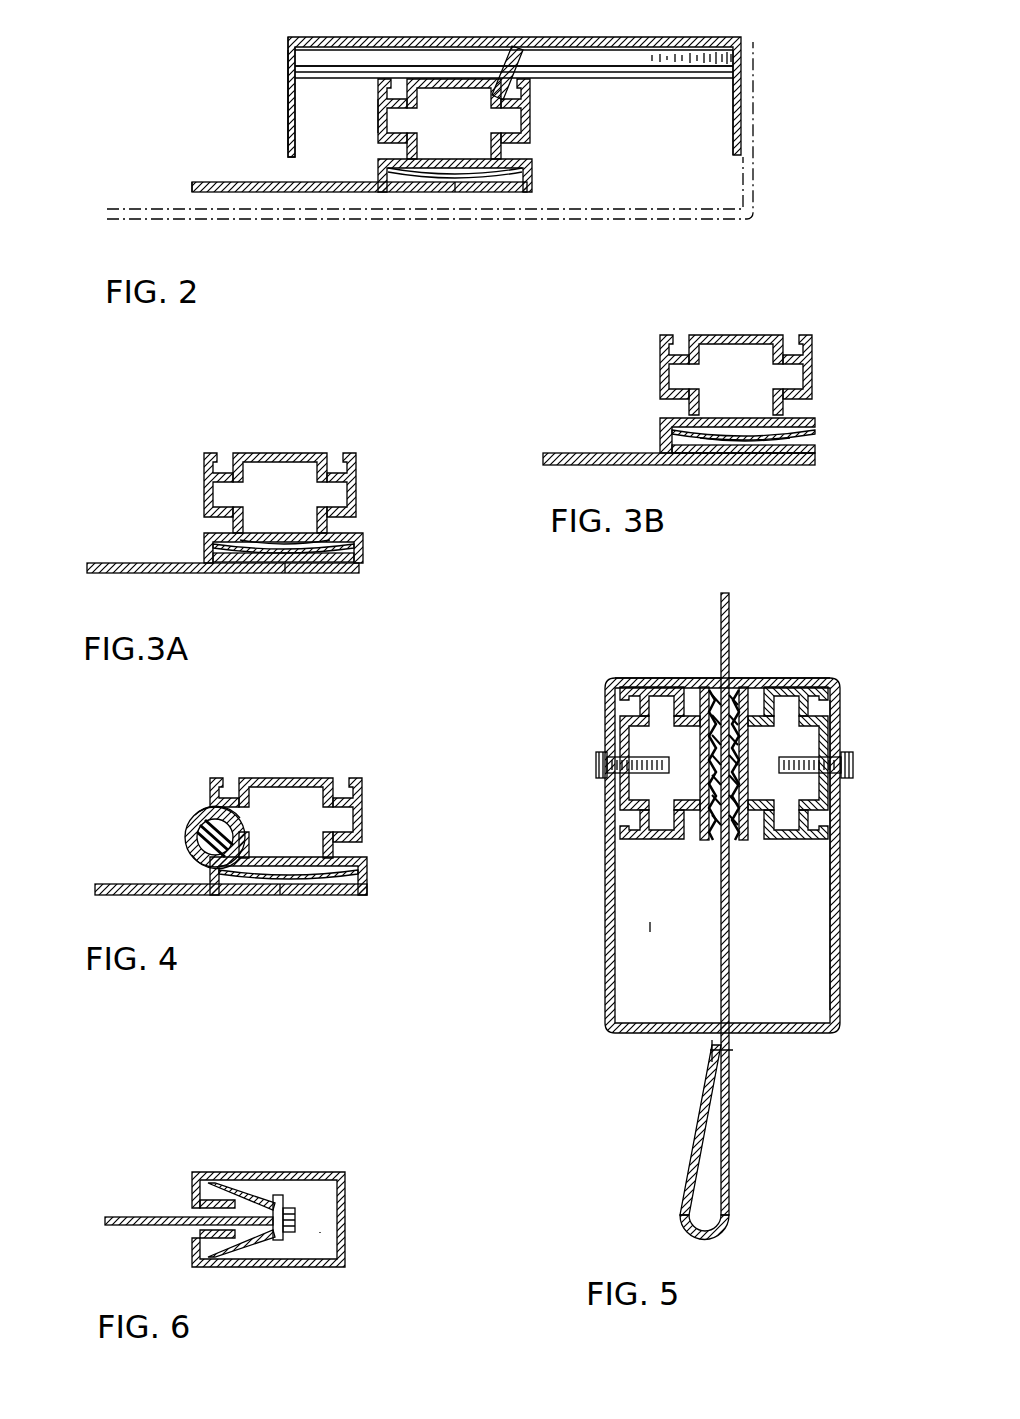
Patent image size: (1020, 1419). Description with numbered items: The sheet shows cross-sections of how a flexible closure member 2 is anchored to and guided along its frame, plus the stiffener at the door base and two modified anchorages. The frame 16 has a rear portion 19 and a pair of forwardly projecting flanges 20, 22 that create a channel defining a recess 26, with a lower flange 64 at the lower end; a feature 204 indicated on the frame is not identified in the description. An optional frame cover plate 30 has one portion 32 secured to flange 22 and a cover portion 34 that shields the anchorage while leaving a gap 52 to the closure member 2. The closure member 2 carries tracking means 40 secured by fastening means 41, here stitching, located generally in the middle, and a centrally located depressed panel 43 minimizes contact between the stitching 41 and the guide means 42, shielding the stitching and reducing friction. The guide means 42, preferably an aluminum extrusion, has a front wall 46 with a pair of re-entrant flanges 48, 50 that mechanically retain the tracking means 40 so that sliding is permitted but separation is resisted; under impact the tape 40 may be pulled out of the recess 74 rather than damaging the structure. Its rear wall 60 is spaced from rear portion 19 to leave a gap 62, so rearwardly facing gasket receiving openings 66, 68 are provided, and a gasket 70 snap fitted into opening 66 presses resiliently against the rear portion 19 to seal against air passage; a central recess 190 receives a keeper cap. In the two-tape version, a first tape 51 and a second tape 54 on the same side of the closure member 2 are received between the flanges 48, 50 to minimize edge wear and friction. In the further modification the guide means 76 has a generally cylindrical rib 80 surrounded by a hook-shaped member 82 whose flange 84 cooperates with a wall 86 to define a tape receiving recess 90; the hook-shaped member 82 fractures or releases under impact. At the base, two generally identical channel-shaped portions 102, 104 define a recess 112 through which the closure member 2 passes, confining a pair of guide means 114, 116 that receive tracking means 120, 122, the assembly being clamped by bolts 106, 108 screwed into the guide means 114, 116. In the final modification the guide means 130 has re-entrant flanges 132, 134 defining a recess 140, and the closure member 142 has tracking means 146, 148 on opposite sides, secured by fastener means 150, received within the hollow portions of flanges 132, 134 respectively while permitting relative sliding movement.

In FIG. 2, the closure member 2 is at (350, 199).
In FIG. 3A, the closure member 2 is at (223, 575).
In FIG. 3B, the closure member 2 is at (570, 452).
In FIG. 4, the closure member 2 is at (225, 891).
In FIG. 5, the closure member 2 is at (731, 628).
In FIG. 2, the frame 16 is at (515, 78).
In FIG. 2, the rear portion 19 is at (633, 40).
In FIG. 2, the forwardly projecting flange 20 is at (287, 128).
In FIG. 2, the forwardly projecting flange 22 is at (733, 127).
In FIG. 2, the recess 26 is at (313, 97).
In FIG. 2, the frame cover plate 30 is at (475, 147).
In FIG. 2, the portion of cover plate 32 is at (753, 153).
In FIG. 2, the cover portion 34 is at (367, 222).
In FIG. 2, the tracking means 40 is at (491, 152).
In FIG. 4, the tracking means 40 is at (288, 878).
In FIG. 2, the fastening means 41 is at (458, 185).
In FIG. 3A, the fastening means 41 is at (285, 573).
In FIG. 4, the fastening means 41 is at (280, 883).
In FIG. 2, the guide means 42 is at (460, 119).
In FIG. 3A, the guide means 42 is at (322, 474).
In FIG. 3B, the guide means 42 is at (822, 365).
In FIG. 4, the guide means 42 is at (316, 791).
In FIG. 3A, the depressed panel 43 is at (298, 540).
In FIG. 3A, the front wall 46 is at (310, 553).
In FIG. 3A, the re-entrant flange 48 is at (328, 573).
In FIG. 3B, the re-entrant flange 48 is at (736, 442).
In FIG. 3A, the re-entrant flange 50 is at (207, 573).
In FIG. 3B, the re-entrant flange 50 is at (662, 450).
In FIG. 3B, the first tape 51 is at (757, 430).
In FIG. 2, the gap 52 is at (253, 197).
In FIG. 3B, the second tape 54 is at (740, 460).
In FIG. 2, the rear wall 60 is at (473, 77).
In FIG. 3A, the rear wall 60 is at (283, 455).
In FIG. 2, the gap 62 is at (417, 57).
In FIG. 2, the lower flange 64 is at (720, 73).
In FIG. 3A, the gasket receiving opening 66 is at (333, 470).
In FIG. 4, the gasket receiving opening 66 is at (343, 790).
In FIG. 3A, the gasket receiving opening 68 is at (228, 473).
In FIG. 4, the gasket receiving opening 68 is at (230, 793).
In FIG. 2, the gasket 70 is at (533, 57).
In FIG. 2, the recess 74 is at (443, 167).
In FIG. 4, the guide means 76 is at (284, 829).
In FIG. 4, the cylindrical rib 80 is at (189, 824).
In FIG. 4, the hook-shaped member 82 is at (207, 807).
In FIG. 4, the flange 84 is at (210, 880).
In FIG. 4, the wall 86 is at (307, 853).
In FIG. 4, the tape receiving recess 90 is at (282, 870).
In FIG. 5, the channel-shaped portion 102 is at (722, 835).
In FIG. 5, the channel-shaped portion 104 is at (840, 938).
In FIG. 5, the bolt 106 is at (597, 765).
In FIG. 5, the bolt 108 is at (850, 762).
In FIG. 5, the recess 112 is at (650, 927).
In FIG. 5, the guide means 114 is at (663, 680).
In FIG. 5, the guide means 116 is at (797, 680).
In FIG. 5, the tracking means 120 is at (745, 737).
In FIG. 5, the tracking means 122 is at (703, 737).
In FIG. 6, the guide means 130 is at (270, 1230).
In FIG. 6, the re-entrant flange 132 is at (195, 1193).
In FIG. 6, the re-entrant flange 134 is at (198, 1250).
In FIG. 6, the recess 140 is at (320, 1232).
In FIG. 6, the closure member 142 is at (142, 1226).
In FIG. 6, the tracking means 146 is at (253, 1190).
In FIG. 6, the tracking means 148 is at (255, 1250).
In FIG. 6, the fastener means 150 is at (297, 1242).
In FIG. 2, the central recess 190 is at (403, 120).
In FIG. 2, the tick marks 204 is at (670, 60).